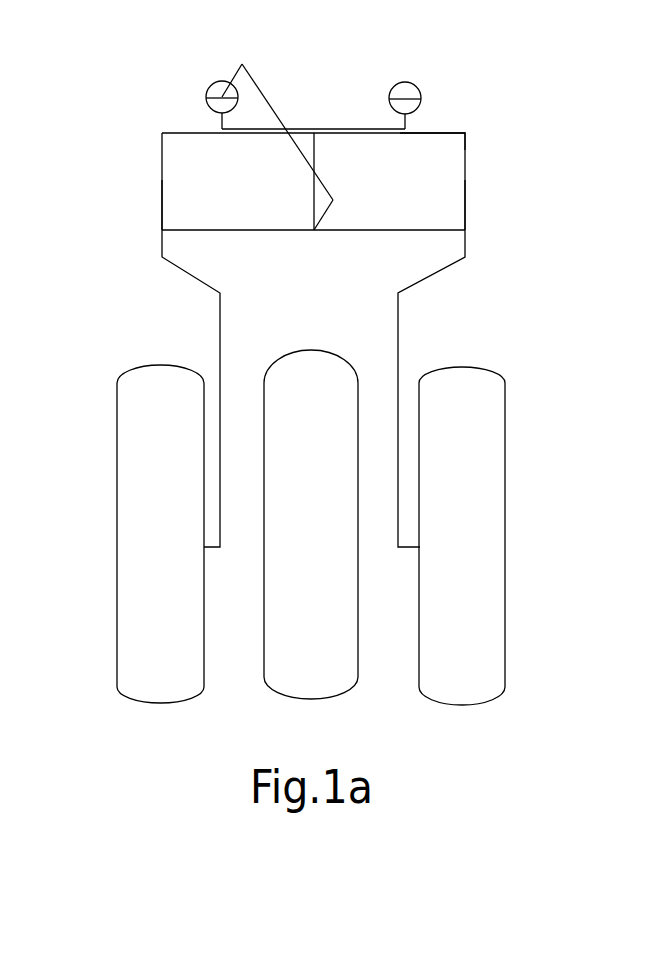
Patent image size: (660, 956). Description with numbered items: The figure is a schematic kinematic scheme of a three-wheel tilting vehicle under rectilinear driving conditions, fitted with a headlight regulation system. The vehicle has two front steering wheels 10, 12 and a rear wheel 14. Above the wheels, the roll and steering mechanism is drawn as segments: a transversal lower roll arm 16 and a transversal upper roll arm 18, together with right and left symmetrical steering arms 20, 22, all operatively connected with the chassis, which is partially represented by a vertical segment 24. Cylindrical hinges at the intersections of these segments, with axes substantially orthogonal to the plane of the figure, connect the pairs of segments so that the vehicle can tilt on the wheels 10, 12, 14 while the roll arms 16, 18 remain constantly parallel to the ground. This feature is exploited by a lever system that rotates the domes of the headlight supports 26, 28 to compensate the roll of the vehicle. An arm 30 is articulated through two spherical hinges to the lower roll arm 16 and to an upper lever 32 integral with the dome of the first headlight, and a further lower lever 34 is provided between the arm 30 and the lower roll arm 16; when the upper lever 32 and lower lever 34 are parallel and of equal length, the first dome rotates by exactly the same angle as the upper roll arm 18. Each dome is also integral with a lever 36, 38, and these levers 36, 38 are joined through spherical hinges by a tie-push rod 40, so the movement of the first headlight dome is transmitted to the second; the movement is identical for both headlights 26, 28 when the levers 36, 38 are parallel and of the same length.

The front steering wheel 10 is at (505, 565).
The front steering wheel 12 is at (117, 583).
The rear wheel 14 is at (352, 683).
The lower roll arm 16 is at (413, 230).
The upper roll arm 18 is at (457, 135).
The right steering arm 20 is at (465, 212).
The left steering arm 22 is at (162, 221).
The chassis 24 is at (315, 158).
The headlight support 26 is at (207, 90).
The headlight support 28 is at (413, 85).
The arm 30 is at (255, 83).
The upper lever 32 is at (232, 82).
The lower lever 34 is at (333, 203).
The lever 36 is at (222, 117).
The lever 38 is at (407, 118).
The tie-push rod 40 is at (320, 130).